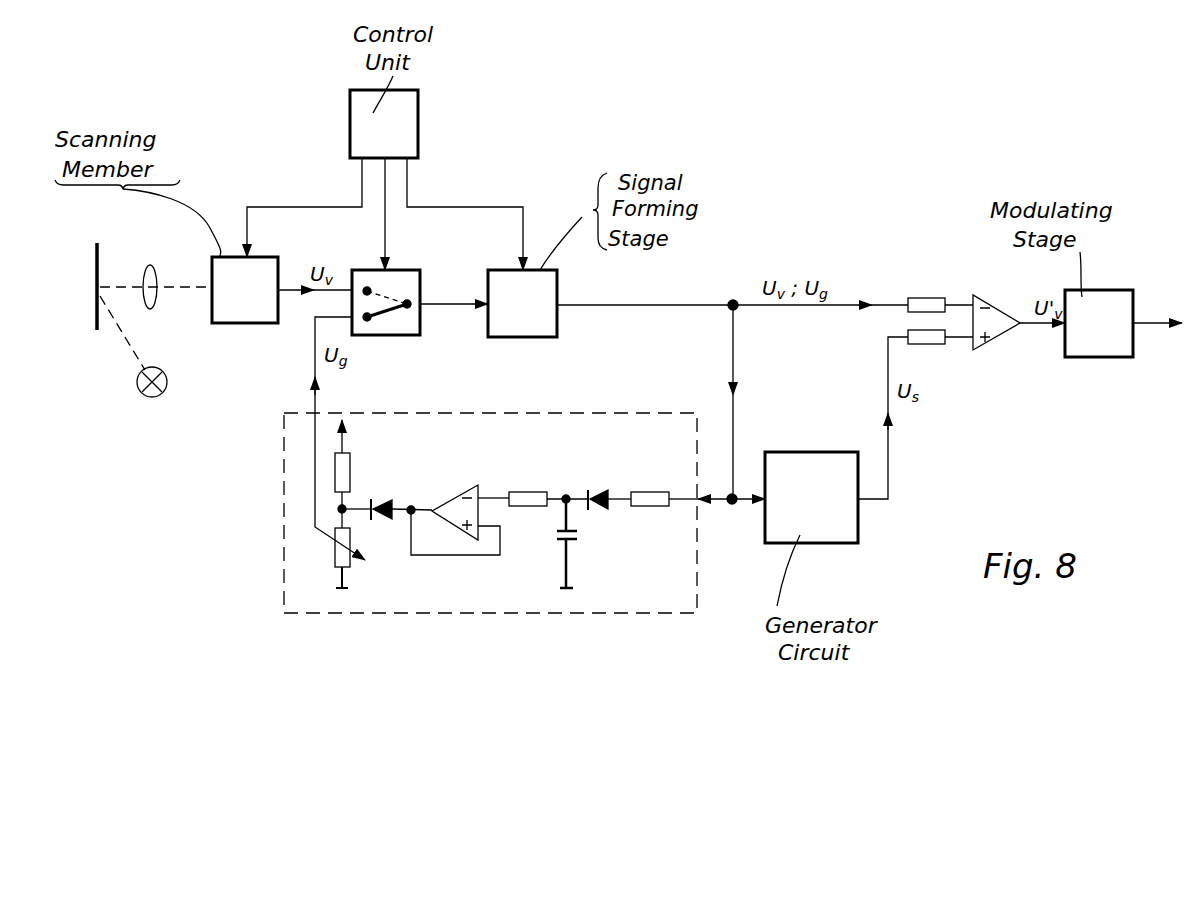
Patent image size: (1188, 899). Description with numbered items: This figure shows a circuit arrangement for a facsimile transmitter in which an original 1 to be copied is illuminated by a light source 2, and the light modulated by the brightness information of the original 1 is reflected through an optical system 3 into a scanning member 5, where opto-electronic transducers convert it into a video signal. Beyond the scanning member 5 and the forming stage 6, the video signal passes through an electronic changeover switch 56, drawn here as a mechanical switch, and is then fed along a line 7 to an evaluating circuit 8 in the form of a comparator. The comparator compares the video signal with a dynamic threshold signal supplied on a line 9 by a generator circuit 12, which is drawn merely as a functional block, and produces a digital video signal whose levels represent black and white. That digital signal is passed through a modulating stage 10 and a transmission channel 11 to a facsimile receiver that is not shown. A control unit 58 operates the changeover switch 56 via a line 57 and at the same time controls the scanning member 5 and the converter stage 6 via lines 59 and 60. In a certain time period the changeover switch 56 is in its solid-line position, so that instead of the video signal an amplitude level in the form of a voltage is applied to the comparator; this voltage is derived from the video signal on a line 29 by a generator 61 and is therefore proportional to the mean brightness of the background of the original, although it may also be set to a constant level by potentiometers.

The original 1 is at (100, 263).
The light source 2 is at (167, 380).
The optical system 3 is at (152, 270).
The scanning member 5 is at (250, 310).
The forming stage 6 is at (530, 325).
The line 7 is at (598, 305).
The evaluating circuit 8 is at (998, 308).
The line 9 is at (887, 470).
The modulating stage 10 is at (1090, 345).
The transmission channel 11 is at (1145, 326).
The generator circuit 12 is at (842, 527).
The line 29 is at (733, 366).
The changeover switch 56 is at (395, 327).
The line 57 is at (385, 235).
The control unit 58 is at (418, 128).
The line 59 is at (307, 207).
The line 60 is at (453, 207).
The generator 61 is at (295, 550).